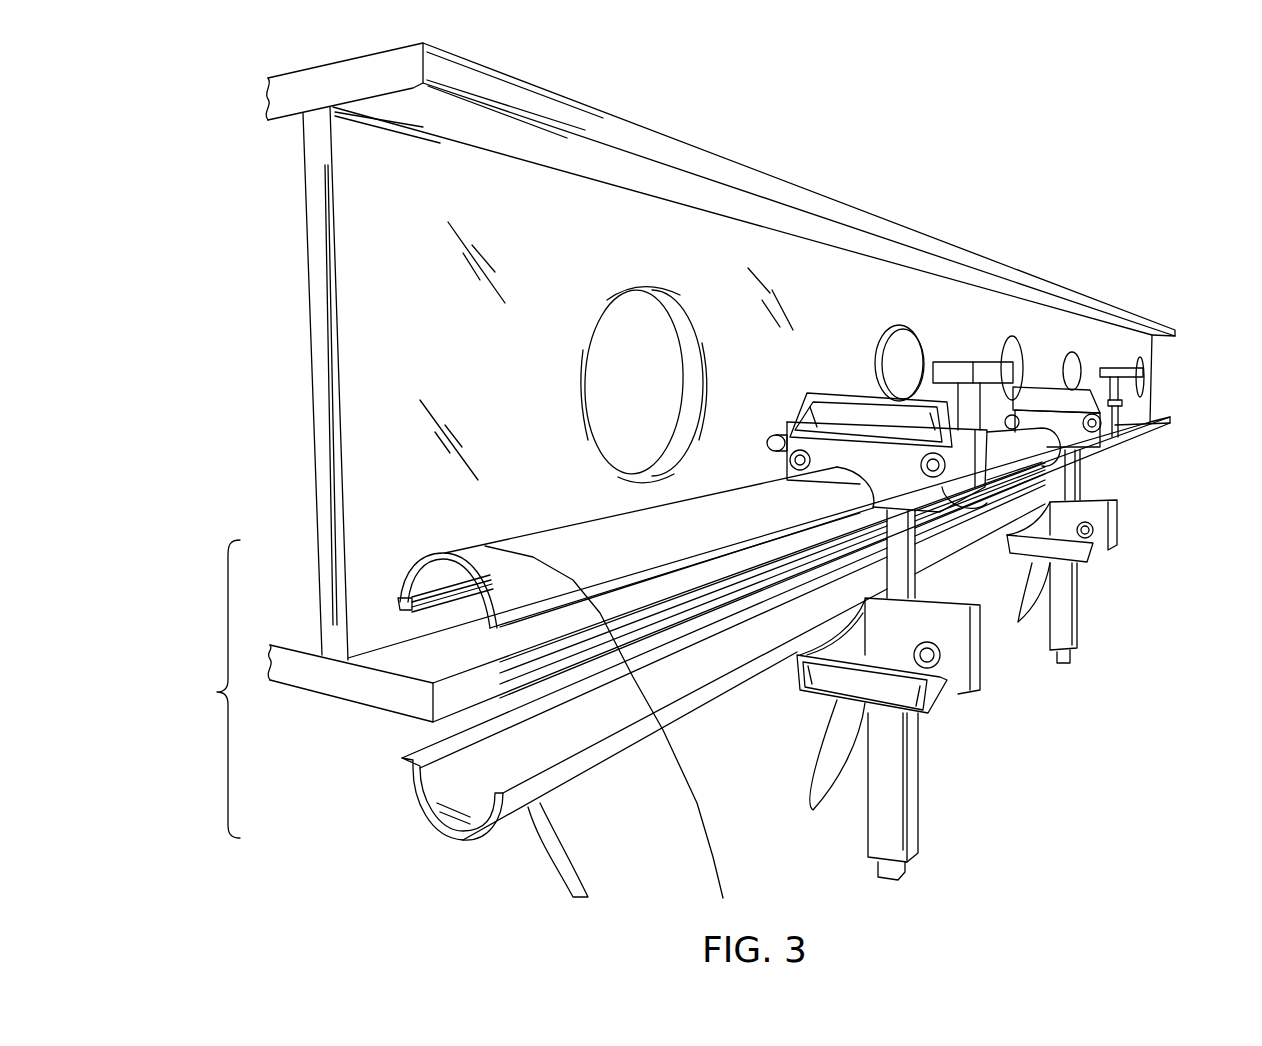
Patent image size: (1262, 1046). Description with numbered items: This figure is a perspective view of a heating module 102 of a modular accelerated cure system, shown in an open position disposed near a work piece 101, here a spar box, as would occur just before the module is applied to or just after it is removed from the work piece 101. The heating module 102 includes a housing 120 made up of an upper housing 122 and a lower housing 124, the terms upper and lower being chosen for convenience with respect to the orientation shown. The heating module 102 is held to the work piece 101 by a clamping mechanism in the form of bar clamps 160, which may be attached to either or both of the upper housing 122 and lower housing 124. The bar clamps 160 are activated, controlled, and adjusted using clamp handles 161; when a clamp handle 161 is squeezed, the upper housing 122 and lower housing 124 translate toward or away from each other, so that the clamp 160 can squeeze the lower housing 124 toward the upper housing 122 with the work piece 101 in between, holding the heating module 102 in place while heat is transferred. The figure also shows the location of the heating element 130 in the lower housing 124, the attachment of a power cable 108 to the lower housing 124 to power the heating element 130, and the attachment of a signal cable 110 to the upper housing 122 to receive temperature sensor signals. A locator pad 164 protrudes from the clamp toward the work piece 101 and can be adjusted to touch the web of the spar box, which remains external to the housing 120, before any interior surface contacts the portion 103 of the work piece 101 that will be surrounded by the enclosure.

The work piece 101 is at (683, 137).
The heating module 102 is at (1147, 462).
The portion of work piece 103 is at (497, 683).
The power cable 108 is at (558, 872).
The signal cable 110 is at (712, 860).
The housing 120 is at (201, 689).
The upper housing 122 is at (417, 565).
The lower housing 124 is at (407, 778).
The heating element 130 is at (432, 813).
The bar clamp 160 is at (923, 790).
The clamp handle 161 is at (812, 788).
The locator pad 164 is at (788, 437).